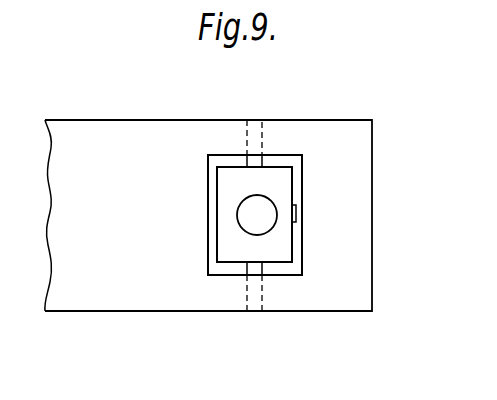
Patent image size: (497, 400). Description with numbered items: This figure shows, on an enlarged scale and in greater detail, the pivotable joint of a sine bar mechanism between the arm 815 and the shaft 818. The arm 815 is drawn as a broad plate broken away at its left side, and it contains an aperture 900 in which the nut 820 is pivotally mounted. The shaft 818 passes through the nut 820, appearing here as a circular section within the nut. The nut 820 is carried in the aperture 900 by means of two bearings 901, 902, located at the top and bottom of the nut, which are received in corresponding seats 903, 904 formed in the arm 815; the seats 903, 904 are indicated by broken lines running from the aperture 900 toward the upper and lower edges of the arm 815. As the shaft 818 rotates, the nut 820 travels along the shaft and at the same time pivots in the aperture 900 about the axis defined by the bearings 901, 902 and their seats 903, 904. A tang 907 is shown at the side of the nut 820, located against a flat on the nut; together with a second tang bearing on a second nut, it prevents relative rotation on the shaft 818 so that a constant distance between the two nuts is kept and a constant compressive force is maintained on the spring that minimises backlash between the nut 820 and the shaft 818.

The arm 815 is at (132, 137).
The aperture 900 is at (208, 248).
The nut 820 is at (282, 247).
The shaft 818 is at (262, 203).
The tang 907 is at (296, 212).
The bearing 901 is at (265, 158).
The bearing 902 is at (263, 264).
The seat 903 is at (260, 121).
The seat 904 is at (247, 290).